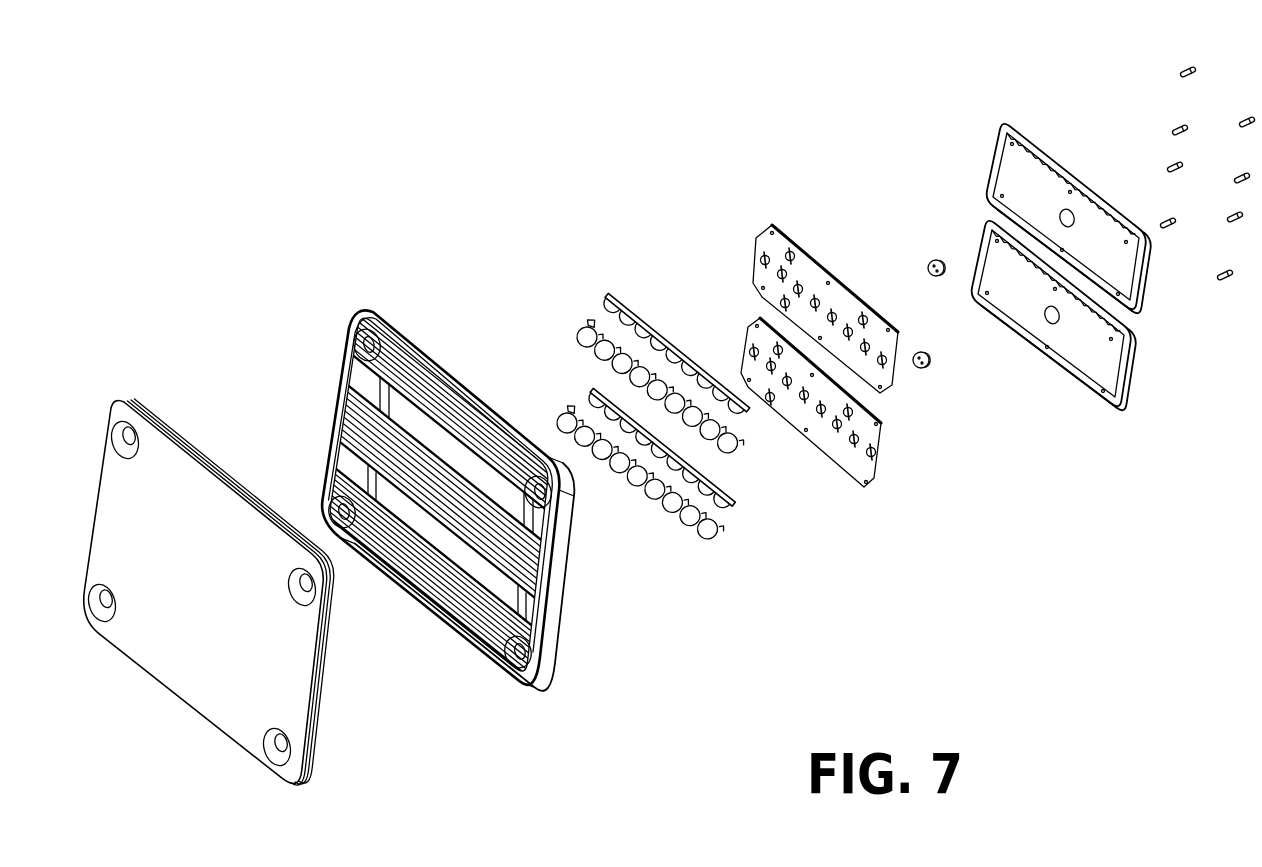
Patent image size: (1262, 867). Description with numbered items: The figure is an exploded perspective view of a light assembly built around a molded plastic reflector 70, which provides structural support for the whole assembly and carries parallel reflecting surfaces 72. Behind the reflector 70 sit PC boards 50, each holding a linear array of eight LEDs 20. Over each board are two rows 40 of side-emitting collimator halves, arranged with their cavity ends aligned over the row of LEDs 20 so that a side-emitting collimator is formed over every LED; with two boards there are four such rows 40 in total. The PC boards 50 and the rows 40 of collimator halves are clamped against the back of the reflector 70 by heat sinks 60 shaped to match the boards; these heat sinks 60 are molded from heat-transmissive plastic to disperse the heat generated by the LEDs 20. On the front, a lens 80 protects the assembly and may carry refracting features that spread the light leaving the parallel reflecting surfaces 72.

The LEDs 20 is at (848, 330).
The rows of side-emitting collimator halves 40 is at (605, 302).
The PC boards 50 is at (758, 233).
The heat sinks 60 is at (988, 150).
The reflector 70 is at (342, 360).
The parallel reflecting surfaces 72 is at (360, 400).
The lens 80 is at (288, 682).